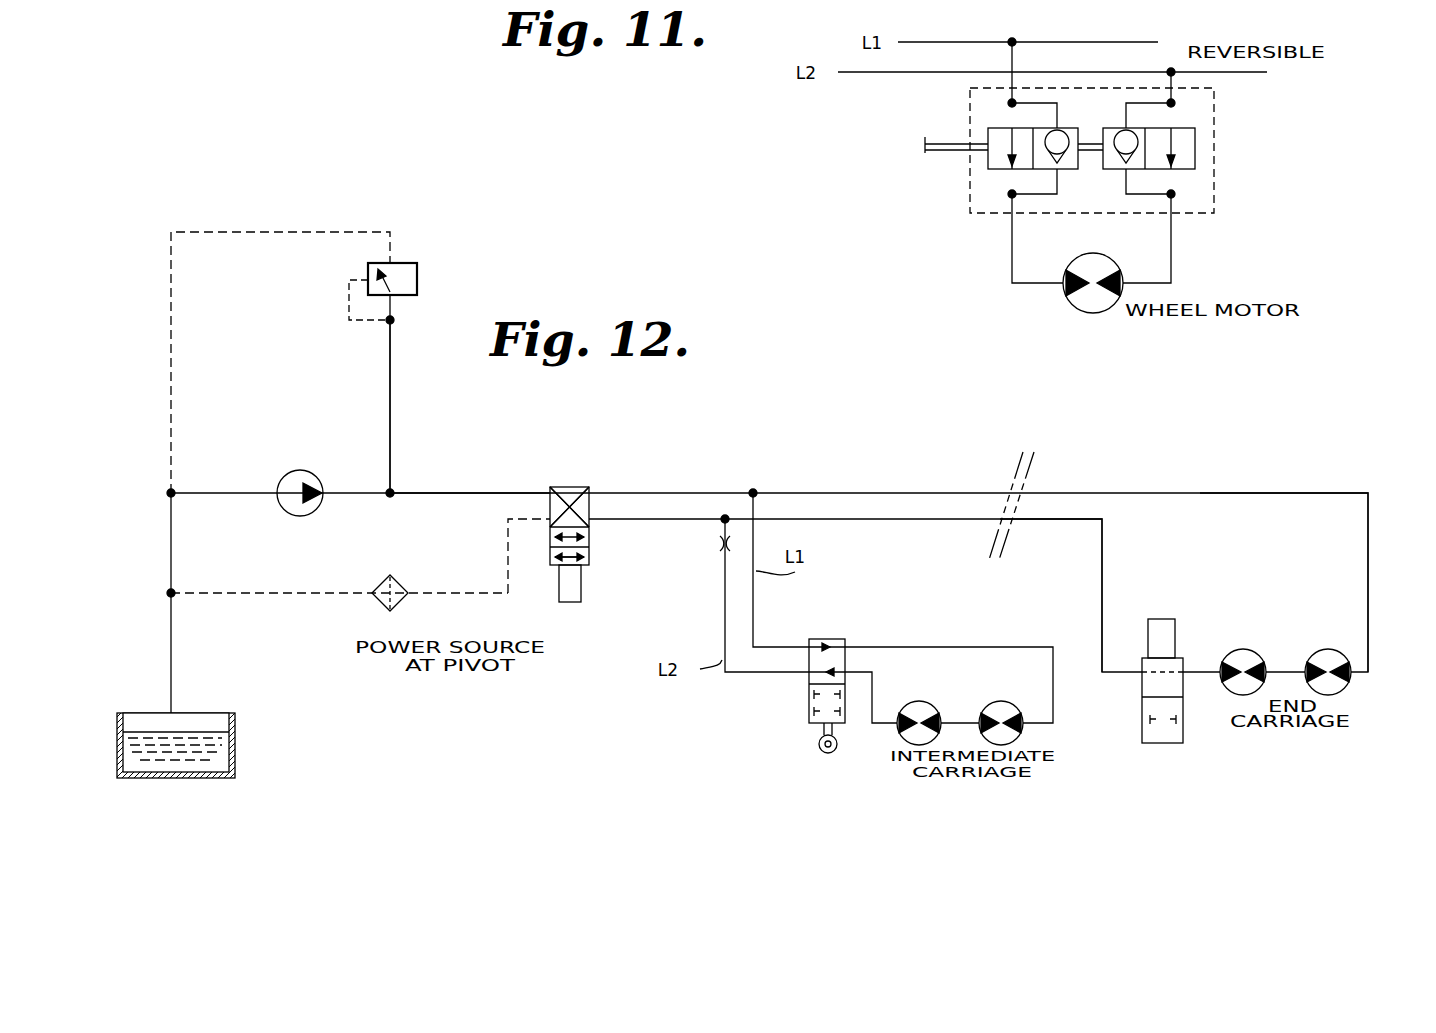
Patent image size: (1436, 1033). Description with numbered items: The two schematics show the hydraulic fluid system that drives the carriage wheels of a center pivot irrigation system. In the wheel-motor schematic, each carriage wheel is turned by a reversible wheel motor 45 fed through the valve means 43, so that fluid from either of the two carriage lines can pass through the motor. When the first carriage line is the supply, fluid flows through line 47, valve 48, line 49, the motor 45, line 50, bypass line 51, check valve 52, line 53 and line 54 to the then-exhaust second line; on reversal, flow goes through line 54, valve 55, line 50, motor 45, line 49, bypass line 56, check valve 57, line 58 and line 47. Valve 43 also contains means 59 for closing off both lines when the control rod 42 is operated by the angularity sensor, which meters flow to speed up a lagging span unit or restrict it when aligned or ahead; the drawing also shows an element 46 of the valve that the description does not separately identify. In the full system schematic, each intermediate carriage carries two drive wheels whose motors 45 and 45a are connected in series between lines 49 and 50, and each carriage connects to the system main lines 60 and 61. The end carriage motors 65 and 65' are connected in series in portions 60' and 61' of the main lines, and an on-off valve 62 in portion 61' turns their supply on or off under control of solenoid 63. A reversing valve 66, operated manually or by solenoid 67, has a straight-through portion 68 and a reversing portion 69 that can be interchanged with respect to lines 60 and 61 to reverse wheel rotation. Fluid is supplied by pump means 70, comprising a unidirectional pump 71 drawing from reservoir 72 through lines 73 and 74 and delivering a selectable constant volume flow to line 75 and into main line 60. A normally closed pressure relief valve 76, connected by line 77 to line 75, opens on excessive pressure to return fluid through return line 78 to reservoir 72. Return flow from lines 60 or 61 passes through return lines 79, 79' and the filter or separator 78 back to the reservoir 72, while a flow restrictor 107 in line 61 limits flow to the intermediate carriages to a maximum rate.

In FIG. 11, the control rod 42 is at (931, 152).
In FIG. 12, the control rod 42 is at (837, 741).
In FIG. 11, the valve means 43 is at (1224, 153).
In FIG. 12, the valve means 43 is at (804, 729).
In FIG. 11, the wheel motor 45 is at (1078, 301).
In FIG. 12, the wheel motor 45 is at (952, 676).
In FIG. 12, the hydraulically-driven motor 45a is at (1005, 702).
In FIG. 12, the directional valve 46 is at (827, 640).
In FIG. 11, the line 47 is at (1007, 58).
In FIG. 11, the valve 48 is at (998, 128).
In FIG. 11, the line 49 is at (1012, 255).
In FIG. 12, the line 49 is at (878, 680).
In FIG. 11, the line 50 is at (1171, 265).
In FIG. 12, the line 50 is at (1053, 688).
In FIG. 11, the bypass line 51 is at (1140, 198).
In FIG. 11, the check valve 52 is at (1118, 128).
In FIG. 11, the line 53 is at (1171, 106).
In FIG. 11, the line 54 is at (1165, 70).
In FIG. 11, the valve 55 is at (1185, 168).
In FIG. 11, the bypass line 56 is at (1037, 198).
In FIG. 11, the check valve 57 is at (1070, 166).
In FIG. 11, the line 58 is at (1033, 100).
In FIG. 12, the means for closing off both lines 59 is at (808, 706).
In FIG. 12, the main supply line 60 is at (767, 560).
In FIG. 12, the portion of main supply line 60' is at (1284, 557).
In FIG. 12, the main supply line 61 is at (865, 565).
In FIG. 12, the portion of main supply line 61' is at (1093, 591).
In FIG. 12, the on-off valve 62 is at (1170, 745).
In FIG. 12, the solenoid 63 is at (1162, 619).
In FIG. 12, the hydraulically driven motor means 65 is at (1262, 652).
In FIG. 12, the hydraulically driven motor means 65' is at (1365, 653).
In FIG. 12, the reversing valve means 66 is at (566, 487).
In FIG. 12, the solenoid 67 is at (582, 594).
In FIG. 12, the straight-through valving portion 68 is at (583, 549).
In FIG. 12, the reversing portion 69 is at (586, 506).
In FIG. 12, the hydraulic fluid pump means 70 is at (270, 614).
In FIG. 12, the unidirection hydraulic fluid pump 71 is at (289, 470).
In FIG. 12, the reservoir 72 is at (236, 759).
In FIG. 12, the hydraulic line 73 is at (171, 560).
In FIG. 12, the hydraulic line 74 is at (197, 492).
In FIG. 12, the line 75 is at (357, 491).
In FIG. 12, the pressure relief valve 76 is at (405, 267).
In FIG. 12, the line 77 is at (390, 353).
In FIG. 12, the return filter or separator means 78 is at (258, 232).
In FIG. 12, the return line 79 is at (505, 555).
In FIG. 12, the return line 79' is at (339, 563).
In FIG. 12, the flow restrictor 107 is at (717, 546).